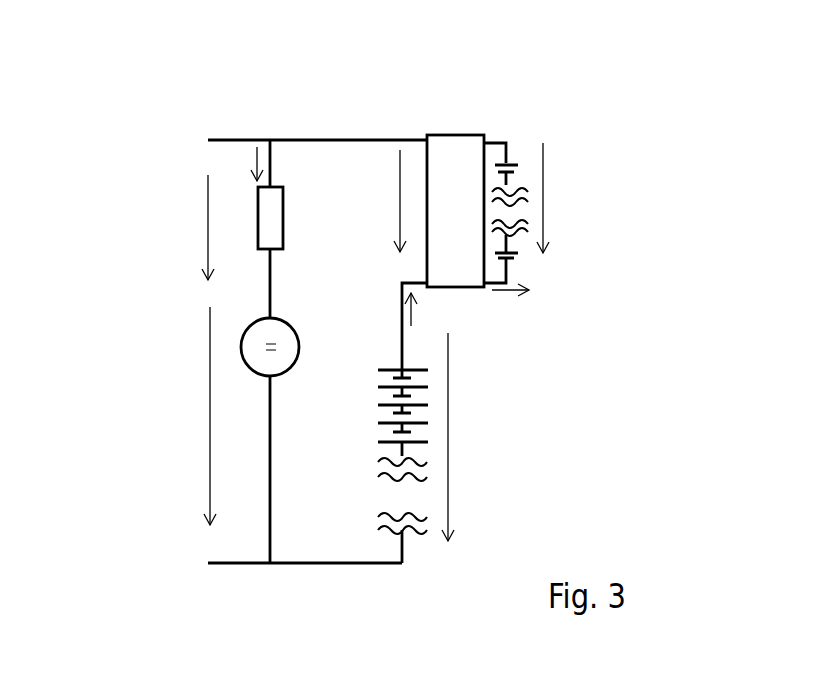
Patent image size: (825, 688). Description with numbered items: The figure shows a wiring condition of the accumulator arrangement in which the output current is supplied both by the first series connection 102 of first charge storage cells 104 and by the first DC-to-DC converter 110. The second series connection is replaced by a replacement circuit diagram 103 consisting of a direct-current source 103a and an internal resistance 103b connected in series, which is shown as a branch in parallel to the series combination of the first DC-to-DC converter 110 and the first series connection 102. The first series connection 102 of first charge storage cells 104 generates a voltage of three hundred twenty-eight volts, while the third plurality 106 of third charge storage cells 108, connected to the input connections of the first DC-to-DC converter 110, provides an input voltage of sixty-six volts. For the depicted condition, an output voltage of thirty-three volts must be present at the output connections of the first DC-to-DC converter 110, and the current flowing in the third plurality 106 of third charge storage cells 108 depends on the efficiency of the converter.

The first series connection 102 is at (575, 448).
The replacement circuit diagram 103 is at (238, 313).
The direct-current source 103a is at (250, 347).
The internal resistance 103b is at (268, 198).
The first charge storage cell 104 is at (430, 370).
The third plurality of third charge storage cells 106 is at (598, 195).
The third charge storage cell 108 is at (520, 165).
The first DC-to-DC converter 110 is at (452, 162).